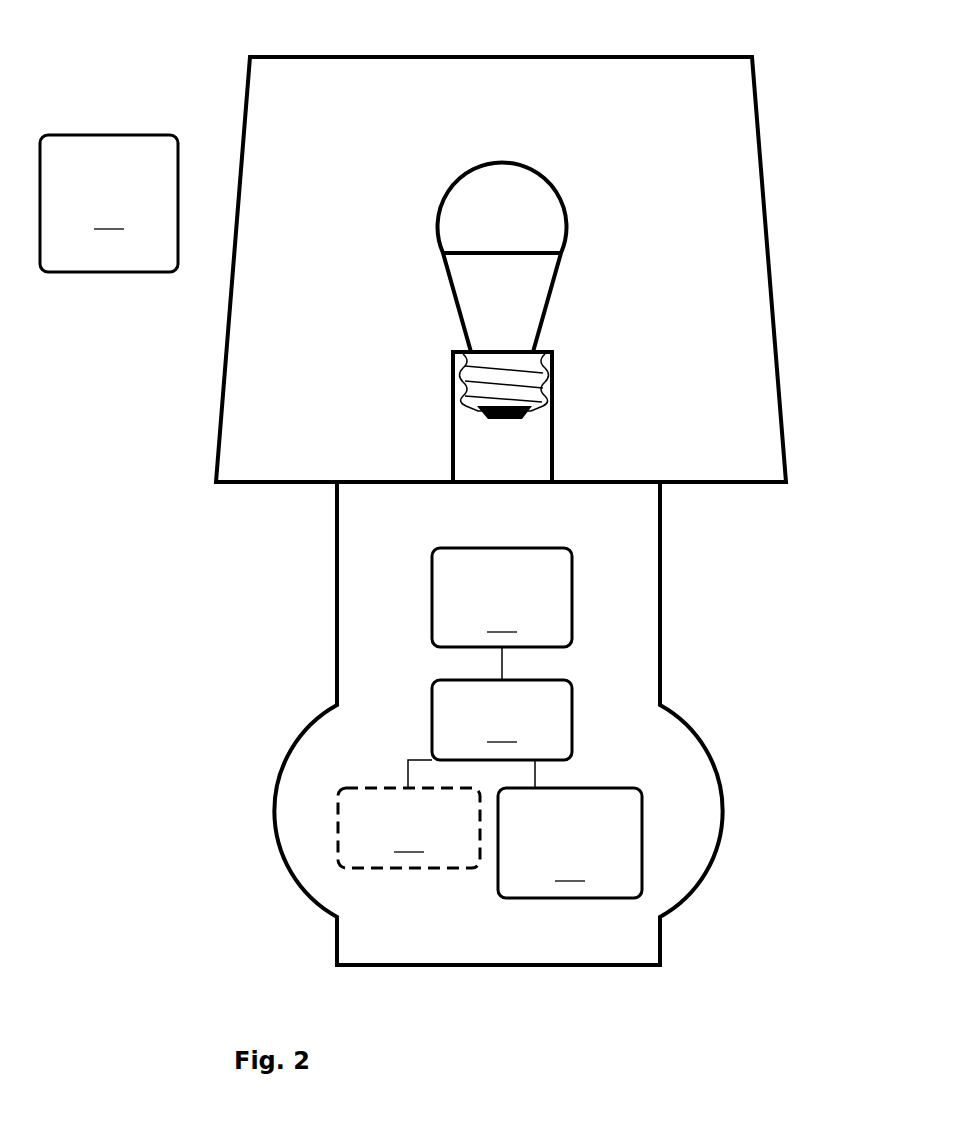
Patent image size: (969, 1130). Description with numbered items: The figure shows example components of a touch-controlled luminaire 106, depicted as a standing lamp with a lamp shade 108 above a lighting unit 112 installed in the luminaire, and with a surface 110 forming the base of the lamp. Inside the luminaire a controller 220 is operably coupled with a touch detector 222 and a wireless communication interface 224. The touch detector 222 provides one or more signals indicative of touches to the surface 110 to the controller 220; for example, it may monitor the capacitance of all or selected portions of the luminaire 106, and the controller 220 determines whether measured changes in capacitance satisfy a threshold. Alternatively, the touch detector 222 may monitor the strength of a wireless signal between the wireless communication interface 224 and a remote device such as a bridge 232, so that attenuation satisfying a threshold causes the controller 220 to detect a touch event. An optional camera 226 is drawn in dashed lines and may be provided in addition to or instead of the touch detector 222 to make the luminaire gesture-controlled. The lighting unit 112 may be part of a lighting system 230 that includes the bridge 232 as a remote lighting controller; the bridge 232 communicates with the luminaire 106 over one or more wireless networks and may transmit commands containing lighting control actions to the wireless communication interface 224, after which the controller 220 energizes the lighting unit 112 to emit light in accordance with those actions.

The luminaire 106 is at (829, 171).
The lamp shade 108 is at (784, 418).
The surface 110 is at (704, 740).
The lighting unit 112 is at (561, 198).
The controller 220 is at (502, 720).
The touch detector 222 is at (502, 597).
The wireless communication interface 224 is at (570, 843).
The camera 226 is at (409, 828).
The lighting system 230 is at (131, 80).
The bridge 232 is at (109, 203).